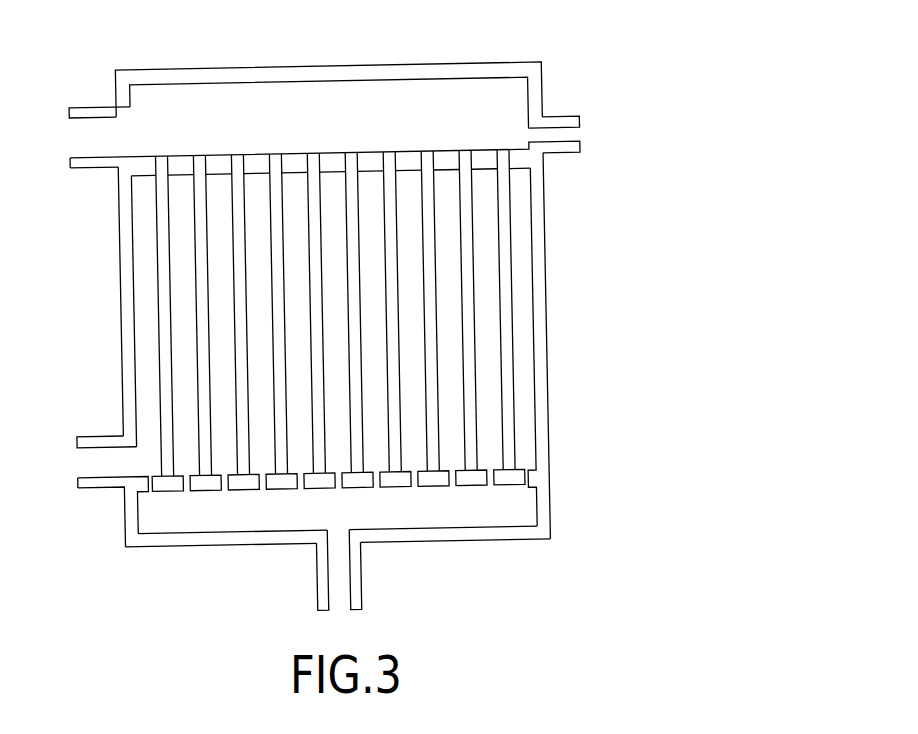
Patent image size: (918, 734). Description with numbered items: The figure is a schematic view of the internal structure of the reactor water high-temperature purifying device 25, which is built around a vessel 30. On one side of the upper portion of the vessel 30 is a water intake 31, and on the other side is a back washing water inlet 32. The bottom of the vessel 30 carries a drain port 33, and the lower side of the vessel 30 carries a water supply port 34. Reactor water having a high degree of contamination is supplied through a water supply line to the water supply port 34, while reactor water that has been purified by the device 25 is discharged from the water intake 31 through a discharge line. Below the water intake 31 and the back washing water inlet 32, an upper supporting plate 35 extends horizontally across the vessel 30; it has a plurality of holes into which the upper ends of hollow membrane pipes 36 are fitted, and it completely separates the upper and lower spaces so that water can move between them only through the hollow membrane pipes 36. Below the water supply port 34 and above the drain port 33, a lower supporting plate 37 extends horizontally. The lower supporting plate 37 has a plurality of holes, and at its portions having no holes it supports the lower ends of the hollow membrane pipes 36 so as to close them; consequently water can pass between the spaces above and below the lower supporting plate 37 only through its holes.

The reactor water high-temperature purifying device 25 is at (303, 310).
The vessel 30 is at (435, 67).
The water intake 31 is at (100, 124).
The back washing water inlet 32 is at (560, 133).
The drain port 33 is at (337, 568).
The water supply port 34 is at (93, 438).
The upper supporting plate 35 is at (213, 163).
The hollow membrane pipes 36 is at (200, 352).
The lower supporting plate 37 is at (237, 486).